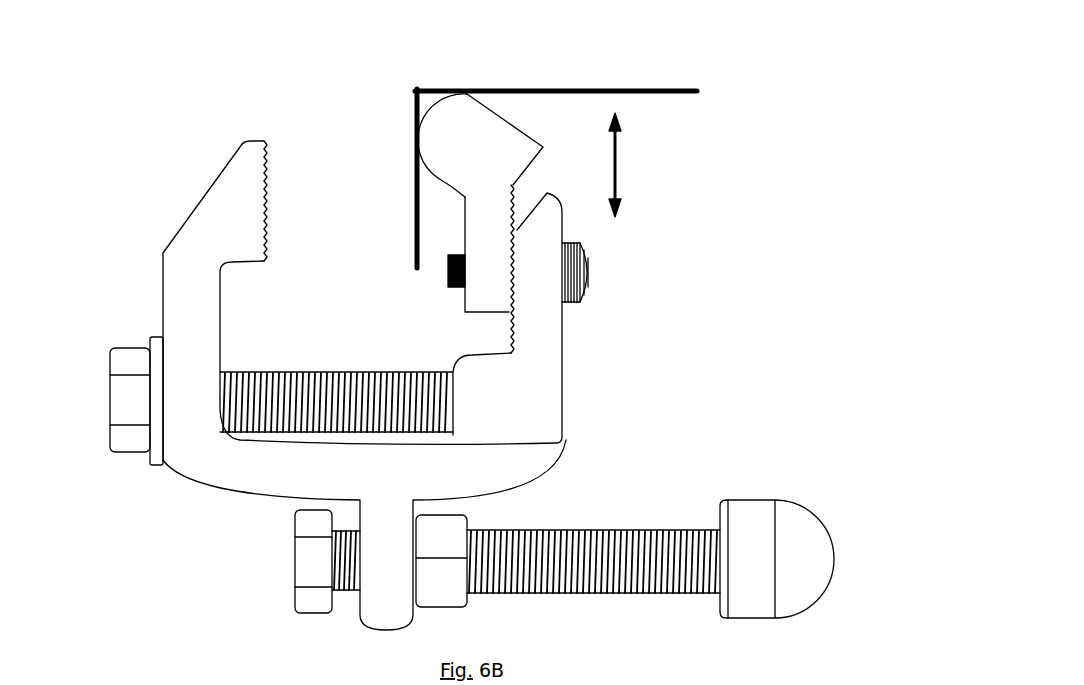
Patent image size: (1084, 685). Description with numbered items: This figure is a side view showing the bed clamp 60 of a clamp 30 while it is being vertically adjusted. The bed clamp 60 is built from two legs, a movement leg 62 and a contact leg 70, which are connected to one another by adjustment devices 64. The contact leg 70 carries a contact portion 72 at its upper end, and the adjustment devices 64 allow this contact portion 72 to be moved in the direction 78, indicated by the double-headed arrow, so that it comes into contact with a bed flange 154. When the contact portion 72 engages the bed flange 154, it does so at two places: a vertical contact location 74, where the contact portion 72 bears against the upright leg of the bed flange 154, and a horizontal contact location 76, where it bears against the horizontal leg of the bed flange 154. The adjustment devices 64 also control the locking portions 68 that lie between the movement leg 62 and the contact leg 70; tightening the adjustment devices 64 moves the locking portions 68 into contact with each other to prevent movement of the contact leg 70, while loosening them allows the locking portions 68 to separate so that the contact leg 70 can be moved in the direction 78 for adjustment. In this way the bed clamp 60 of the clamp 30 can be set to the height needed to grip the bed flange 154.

The clamp 30 is at (138, 86).
The bed clamp 60 is at (400, 94).
The movement leg 62 is at (563, 412).
The adjustment devices 64 is at (587, 263).
The locking portions 68 is at (513, 280).
The contact leg 70 is at (528, 104).
The contact portion 72 is at (467, 147).
The vertical contact location 74 is at (415, 146).
The horizontal contact location 76 is at (460, 91).
The direction 78 is at (620, 162).
The bed flange 154 is at (697, 91).